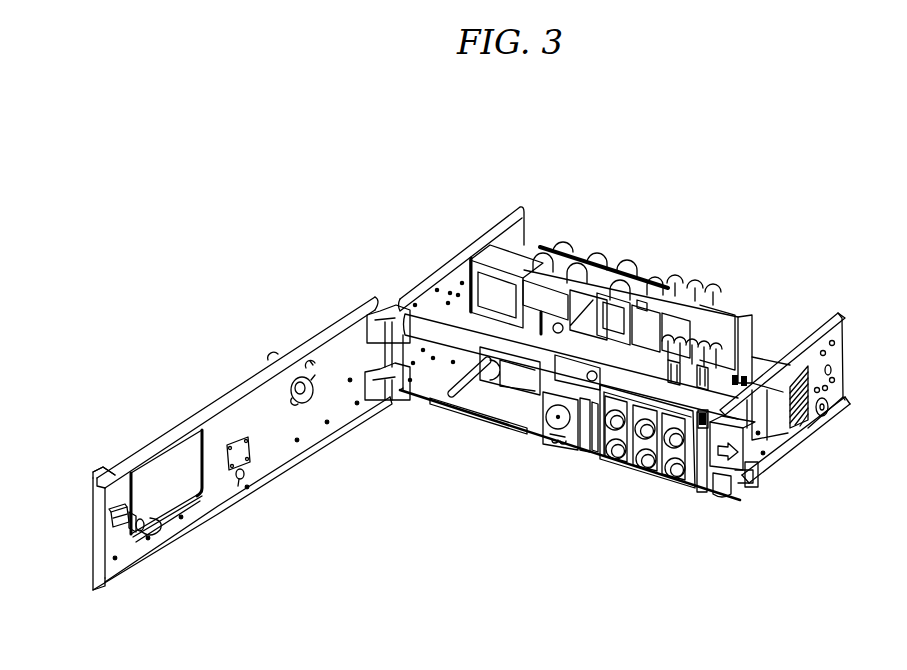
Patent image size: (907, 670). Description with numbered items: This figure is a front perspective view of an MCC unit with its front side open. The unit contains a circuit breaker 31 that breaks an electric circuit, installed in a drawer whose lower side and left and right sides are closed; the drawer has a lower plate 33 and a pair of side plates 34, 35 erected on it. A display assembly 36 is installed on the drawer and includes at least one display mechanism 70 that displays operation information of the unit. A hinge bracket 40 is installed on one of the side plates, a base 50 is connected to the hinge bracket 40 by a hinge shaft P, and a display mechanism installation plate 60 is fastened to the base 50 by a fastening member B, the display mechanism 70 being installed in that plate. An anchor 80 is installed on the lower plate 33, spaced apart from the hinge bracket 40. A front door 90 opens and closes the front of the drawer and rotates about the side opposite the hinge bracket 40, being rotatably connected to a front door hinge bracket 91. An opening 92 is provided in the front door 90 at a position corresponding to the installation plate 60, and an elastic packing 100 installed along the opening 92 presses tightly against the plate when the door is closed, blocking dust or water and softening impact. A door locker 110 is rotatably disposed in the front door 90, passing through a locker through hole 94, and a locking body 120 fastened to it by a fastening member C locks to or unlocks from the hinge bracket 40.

The circuit breaker 31 is at (532, 266).
The lower plate 33 is at (480, 403).
The side plate 34 is at (838, 357).
The side plate 35 is at (436, 290).
The display assembly 36 is at (609, 499).
The hinge bracket 40 is at (770, 464).
The base 50 is at (739, 520).
The display mechanism installation plate 60 is at (688, 481).
The display mechanism 70 is at (611, 453).
The anchor 80 is at (573, 457).
The front door 90 is at (246, 408).
The front door hinge bracket 91 is at (387, 304).
The opening 92 is at (165, 476).
The locker through hole 94 is at (120, 484).
The packing 100 is at (190, 438).
The door locker 110 is at (111, 523).
The locking body 120 is at (131, 535).
The fastening member B is at (610, 386).
The fastening member C is at (141, 527).
The hinge shaft P is at (704, 416).